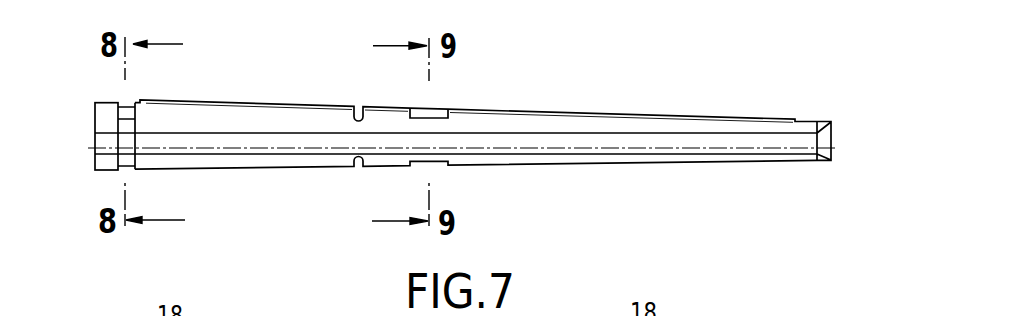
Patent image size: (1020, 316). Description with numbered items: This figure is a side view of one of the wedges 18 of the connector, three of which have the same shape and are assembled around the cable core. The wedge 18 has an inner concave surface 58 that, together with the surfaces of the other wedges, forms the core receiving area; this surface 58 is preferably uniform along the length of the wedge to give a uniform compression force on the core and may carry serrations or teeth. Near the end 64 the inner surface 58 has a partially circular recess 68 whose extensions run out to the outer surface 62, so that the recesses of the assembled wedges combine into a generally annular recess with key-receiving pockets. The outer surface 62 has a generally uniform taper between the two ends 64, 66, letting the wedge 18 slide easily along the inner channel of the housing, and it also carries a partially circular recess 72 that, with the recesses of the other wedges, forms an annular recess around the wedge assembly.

The wedge 18 is at (549, 111).
The inner concave surface 58 is at (505, 140).
The outer surface 62 is at (641, 113).
The end 64 is at (95, 130).
The end 66 is at (830, 140).
The partially circular recess 68 is at (124, 133).
The partially circular recess 72 is at (432, 117).